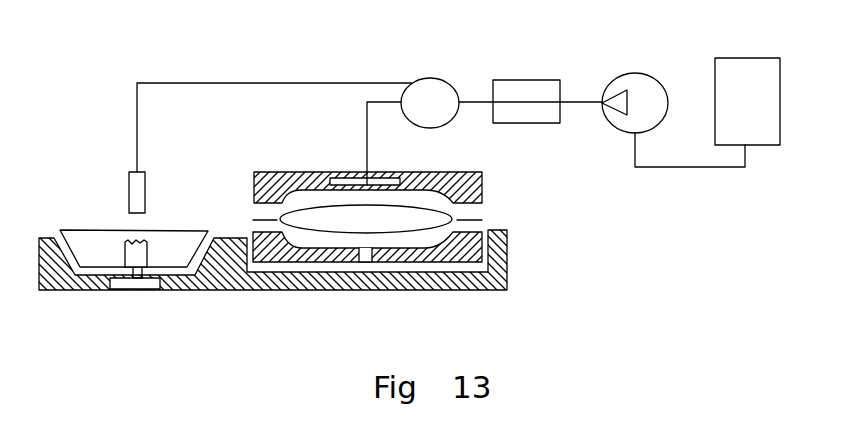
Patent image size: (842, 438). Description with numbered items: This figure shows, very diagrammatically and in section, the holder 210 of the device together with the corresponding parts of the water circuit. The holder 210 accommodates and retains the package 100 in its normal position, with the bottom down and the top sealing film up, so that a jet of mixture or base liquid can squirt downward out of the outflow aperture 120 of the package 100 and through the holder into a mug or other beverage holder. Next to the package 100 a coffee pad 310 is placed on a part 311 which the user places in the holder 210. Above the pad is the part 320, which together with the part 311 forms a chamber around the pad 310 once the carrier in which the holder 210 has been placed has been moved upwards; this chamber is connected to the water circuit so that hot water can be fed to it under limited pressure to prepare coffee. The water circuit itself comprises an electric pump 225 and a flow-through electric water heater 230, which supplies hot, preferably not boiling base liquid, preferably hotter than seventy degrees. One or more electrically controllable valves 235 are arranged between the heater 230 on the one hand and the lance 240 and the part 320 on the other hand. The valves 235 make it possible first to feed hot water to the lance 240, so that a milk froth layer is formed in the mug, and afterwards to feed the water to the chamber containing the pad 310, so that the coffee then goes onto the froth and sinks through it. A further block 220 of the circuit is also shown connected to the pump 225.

The package 100 is at (118, 253).
The outflow aperture 120 is at (137, 280).
The holder 210 is at (507, 270).
The reservoir 220 is at (753, 68).
The electric pump 225 is at (653, 82).
The flow-through electric water heater 230 is at (527, 87).
The electrically controllable valve 235 is at (420, 85).
The lance 240 is at (143, 200).
The coffee pad 310 is at (408, 223).
The part 311 is at (270, 257).
The part 320 is at (481, 197).